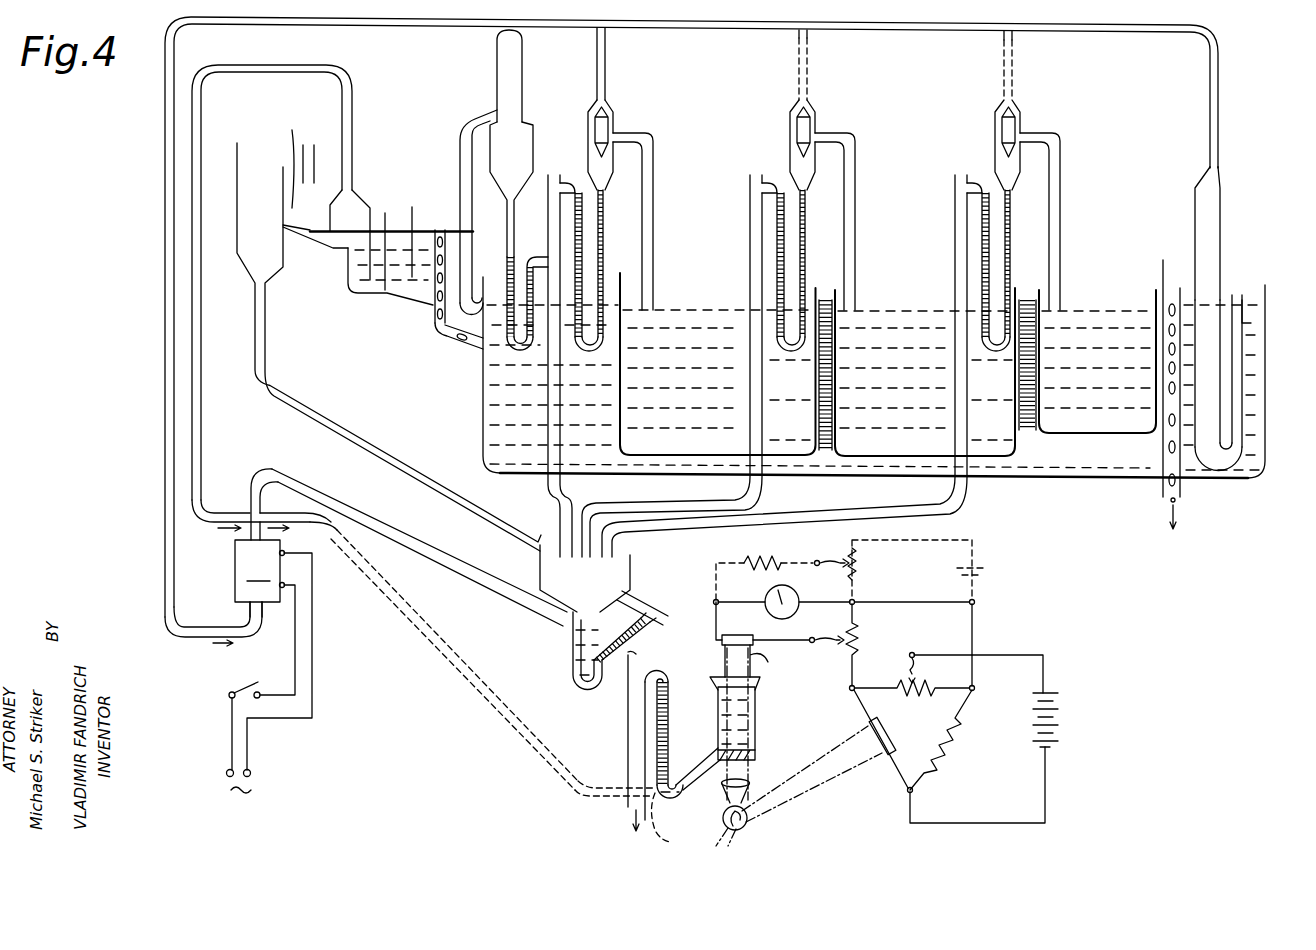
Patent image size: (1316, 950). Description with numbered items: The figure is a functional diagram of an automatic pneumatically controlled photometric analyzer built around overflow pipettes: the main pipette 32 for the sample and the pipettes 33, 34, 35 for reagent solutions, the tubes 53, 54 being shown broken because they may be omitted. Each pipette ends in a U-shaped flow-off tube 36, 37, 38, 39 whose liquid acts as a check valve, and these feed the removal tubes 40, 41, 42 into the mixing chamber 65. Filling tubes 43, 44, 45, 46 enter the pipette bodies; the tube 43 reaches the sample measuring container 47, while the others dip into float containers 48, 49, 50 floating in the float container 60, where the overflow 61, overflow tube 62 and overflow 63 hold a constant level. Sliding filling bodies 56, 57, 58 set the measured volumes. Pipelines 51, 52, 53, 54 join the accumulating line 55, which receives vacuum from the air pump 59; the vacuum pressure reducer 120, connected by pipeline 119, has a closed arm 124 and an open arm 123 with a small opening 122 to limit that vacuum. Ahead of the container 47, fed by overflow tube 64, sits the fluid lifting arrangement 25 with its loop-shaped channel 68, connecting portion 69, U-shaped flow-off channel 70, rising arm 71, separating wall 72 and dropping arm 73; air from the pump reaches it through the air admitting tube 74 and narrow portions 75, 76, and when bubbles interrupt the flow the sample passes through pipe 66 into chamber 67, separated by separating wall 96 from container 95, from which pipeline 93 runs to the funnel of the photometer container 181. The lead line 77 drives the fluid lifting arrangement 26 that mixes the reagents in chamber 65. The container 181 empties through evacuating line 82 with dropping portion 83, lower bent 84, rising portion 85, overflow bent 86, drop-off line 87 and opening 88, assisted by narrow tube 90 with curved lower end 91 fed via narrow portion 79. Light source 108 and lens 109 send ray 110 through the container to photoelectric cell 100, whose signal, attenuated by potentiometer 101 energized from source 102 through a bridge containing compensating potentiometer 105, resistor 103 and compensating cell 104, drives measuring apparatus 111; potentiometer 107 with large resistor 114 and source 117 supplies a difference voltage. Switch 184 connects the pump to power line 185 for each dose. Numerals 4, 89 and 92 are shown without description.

The inclined connecting tube 4 is at (620, 633).
The fluid lifting arrangement 25 is at (336, 258).
The fluid lifting arrangement 26 is at (570, 650).
The main pipette 32 is at (536, 138).
The pipette 33 is at (610, 182).
The additional pipette 34 is at (812, 182).
The additional pipette 35 is at (1017, 182).
The U-shaped flow-off tube 36 is at (533, 258).
The U-shaped flow-off tube 37 is at (598, 260).
The U-shaped flow-off tube 38 is at (806, 256).
The U-shaped flow-off tube 39 is at (1008, 247).
The removal tube 40 is at (546, 486).
The removal tube 41 is at (612, 505).
The removal tube 42 is at (795, 512).
The filling tube 43 is at (460, 140).
The filling tube 44 is at (656, 164).
The filling tube 45 is at (858, 164).
The filling tube 46 is at (1063, 174).
The sample measuring container 47 is at (416, 304).
The float container 48 is at (688, 308).
The float container 49 is at (884, 310).
The float container 50 is at (1092, 310).
The pipeline 51 is at (522, 41).
The pipeline 52 is at (606, 62).
The tube 53 is at (808, 62).
The tube 54 is at (1013, 56).
The accumulating line 55 is at (417, 27).
The filling body 56 is at (614, 116).
The filling body 57 is at (816, 116).
The filling body 58 is at (1021, 116).
The air pump 59 is at (273, 655).
The float container 60 is at (482, 420).
The overflow 61 is at (1174, 295).
The overflow tube 62 is at (1166, 490).
The overflow 63 is at (1172, 528).
The overflow tube 64 is at (448, 333).
The mixing chamber 65 is at (539, 570).
The pipe 66 is at (314, 148).
The chamber 67 is at (289, 164).
The loop-shaped channel 68 is at (330, 250).
The connecting portion 69 is at (340, 194).
The U-shaped flow-off channel 70 is at (362, 297).
The rising arm 71 is at (370, 212).
The overflow separating wall 72 is at (389, 241).
The dropping arm 73 is at (410, 215).
The air admitting tube 74 is at (353, 103).
The narrow portion 75 is at (214, 510).
The narrow portion 76 is at (256, 485).
The lead line 77 is at (368, 522).
The narrow portion 79 is at (300, 527).
The evacuating line 82 is at (694, 754).
The dropping portion 83 is at (680, 788).
The lower bent 84 is at (657, 805).
The rising portion 85 is at (672, 702).
The overflow bent 86 is at (658, 670).
The drop-off line 87 is at (627, 727).
The drop-off opening 88 is at (633, 823).
The connecting nozzle 89 is at (640, 658).
The narrow tube 90 is at (522, 732).
The lower end 91 is at (657, 840).
The nozzle 92 is at (636, 615).
The pipeline 93 is at (399, 464).
The container 95 is at (237, 143).
The separating wall 96 is at (283, 167).
The photoelectric cell 100 is at (745, 633).
The potentiometer 101 is at (863, 634).
The voltage source 102 is at (1058, 716).
The resistor 103 is at (948, 745).
The photoelectric compensating cell 104 is at (888, 760).
The compensating potentiometer 105 is at (920, 674).
The potentiometer 107 is at (856, 568).
The light source 108 is at (746, 824).
The lens 109 is at (749, 781).
The ray of light 110 is at (775, 657).
The measuring apparatus 111 is at (793, 595).
The large resistor 114 is at (759, 556).
The voltage source 117 is at (988, 572).
The pipeline 119 is at (1218, 96).
The vacuum pressure reducer 120 is at (1223, 258).
The small opening 122 is at (1254, 320).
The open arm 123 is at (1237, 386).
The closed arm 124 is at (1206, 200).
The photometer container 181 is at (757, 712).
The switch 184 is at (252, 684).
The power line 185 is at (250, 777).